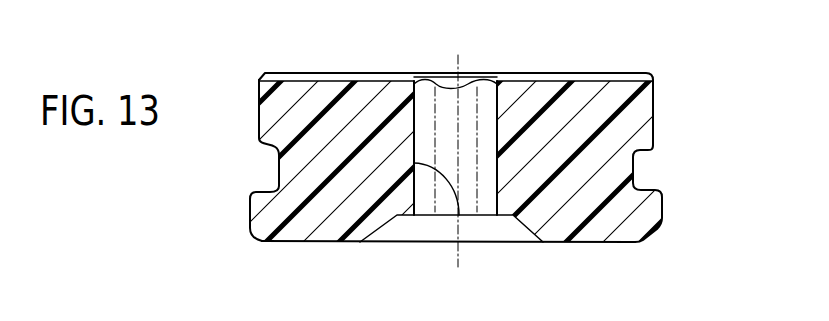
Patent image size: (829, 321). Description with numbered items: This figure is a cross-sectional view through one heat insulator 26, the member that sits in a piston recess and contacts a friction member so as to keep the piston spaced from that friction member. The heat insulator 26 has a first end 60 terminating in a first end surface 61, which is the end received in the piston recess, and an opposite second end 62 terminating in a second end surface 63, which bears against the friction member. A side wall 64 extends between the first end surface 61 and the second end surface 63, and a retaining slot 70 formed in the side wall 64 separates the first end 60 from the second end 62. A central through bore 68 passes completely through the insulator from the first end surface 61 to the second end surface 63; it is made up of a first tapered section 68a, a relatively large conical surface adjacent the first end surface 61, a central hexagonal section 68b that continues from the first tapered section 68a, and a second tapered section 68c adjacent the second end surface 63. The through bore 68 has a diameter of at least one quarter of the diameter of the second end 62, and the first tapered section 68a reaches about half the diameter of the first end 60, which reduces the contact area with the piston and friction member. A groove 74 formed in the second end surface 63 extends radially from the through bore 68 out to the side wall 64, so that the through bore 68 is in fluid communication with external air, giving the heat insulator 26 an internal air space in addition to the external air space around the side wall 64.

The heat insulator 26 is at (631, 56).
The first end 60 is at (668, 210).
The first end surface 61 is at (593, 243).
The second end 62 is at (661, 102).
The second end surface 63 is at (542, 74).
The side wall 64 is at (257, 138).
The through bore 68 is at (460, 113).
The first tapered section 68a is at (395, 228).
The central hexagonal section 68b is at (447, 175).
The second tapered section 68c is at (421, 80).
The retaining slot 70 is at (279, 180).
The groove 74 is at (317, 72).